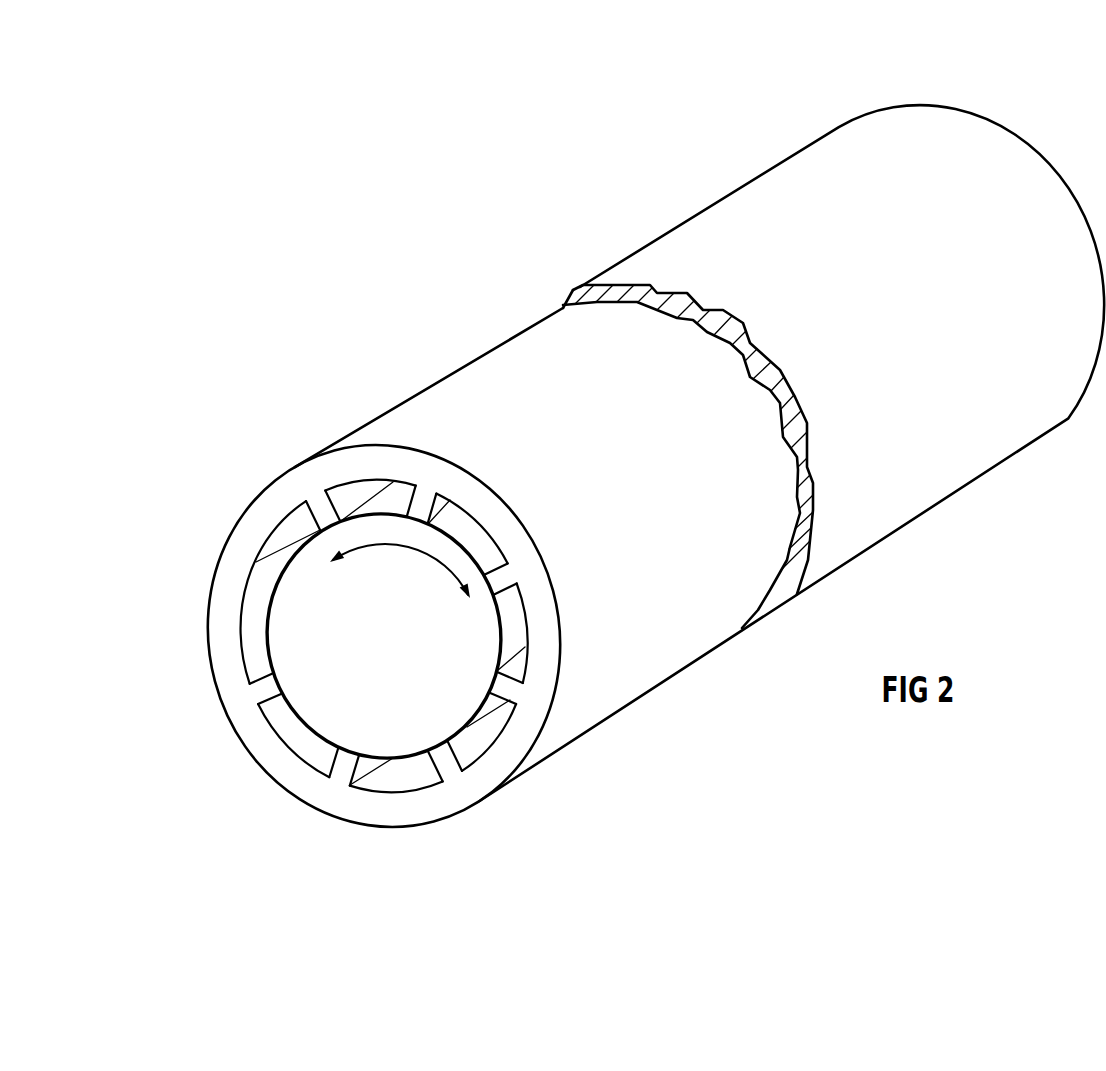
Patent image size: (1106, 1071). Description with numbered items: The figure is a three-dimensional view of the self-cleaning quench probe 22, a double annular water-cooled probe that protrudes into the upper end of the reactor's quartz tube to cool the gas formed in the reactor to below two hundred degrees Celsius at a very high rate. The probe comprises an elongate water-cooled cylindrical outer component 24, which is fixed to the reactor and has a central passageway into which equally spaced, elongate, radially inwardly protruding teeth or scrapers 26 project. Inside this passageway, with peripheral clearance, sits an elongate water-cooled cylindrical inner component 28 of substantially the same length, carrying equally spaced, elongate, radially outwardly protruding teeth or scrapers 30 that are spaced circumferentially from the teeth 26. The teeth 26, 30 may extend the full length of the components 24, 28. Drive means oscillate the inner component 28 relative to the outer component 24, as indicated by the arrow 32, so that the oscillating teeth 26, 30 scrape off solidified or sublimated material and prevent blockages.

The self-cleaning quench probe 22 is at (645, 170).
The cylindrical outer component 24 is at (492, 400).
The teeth or scrapers 26 is at (338, 764).
The cylindrical inner component 28 is at (390, 713).
The teeth or scrapers 30 is at (318, 500).
The arrow 32 is at (390, 547).